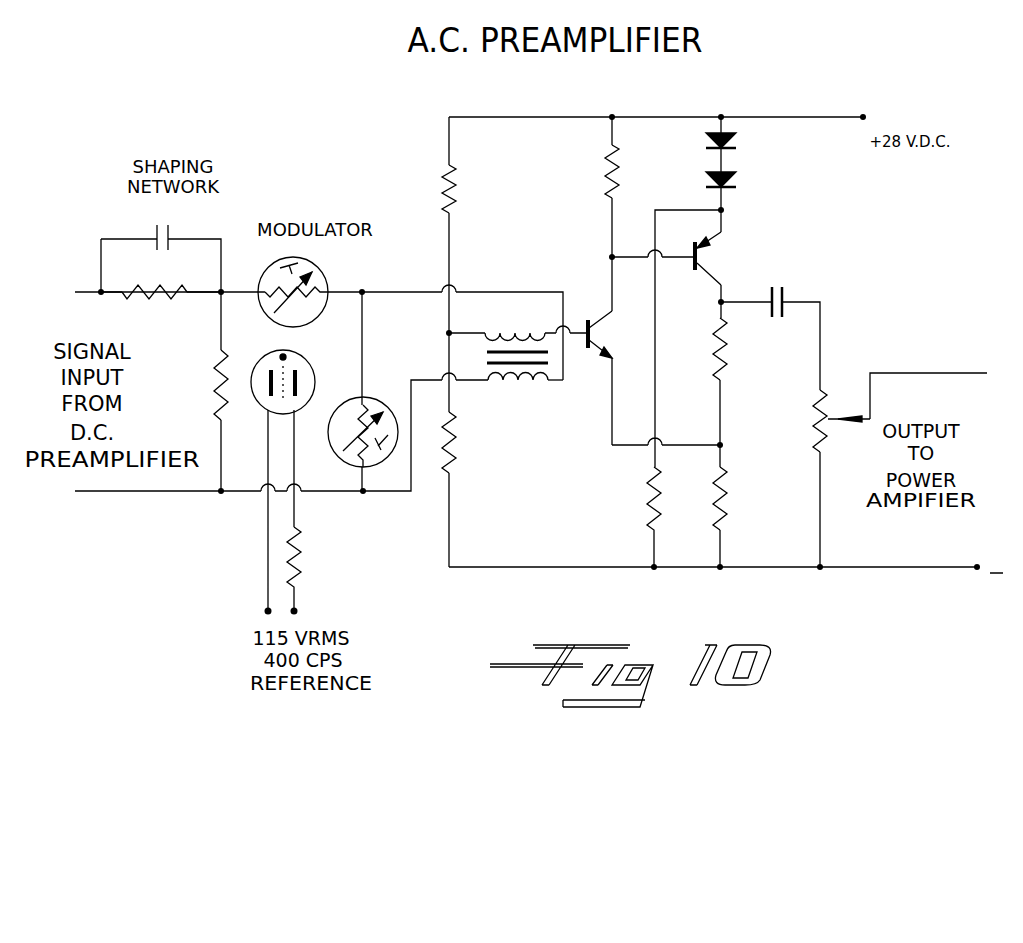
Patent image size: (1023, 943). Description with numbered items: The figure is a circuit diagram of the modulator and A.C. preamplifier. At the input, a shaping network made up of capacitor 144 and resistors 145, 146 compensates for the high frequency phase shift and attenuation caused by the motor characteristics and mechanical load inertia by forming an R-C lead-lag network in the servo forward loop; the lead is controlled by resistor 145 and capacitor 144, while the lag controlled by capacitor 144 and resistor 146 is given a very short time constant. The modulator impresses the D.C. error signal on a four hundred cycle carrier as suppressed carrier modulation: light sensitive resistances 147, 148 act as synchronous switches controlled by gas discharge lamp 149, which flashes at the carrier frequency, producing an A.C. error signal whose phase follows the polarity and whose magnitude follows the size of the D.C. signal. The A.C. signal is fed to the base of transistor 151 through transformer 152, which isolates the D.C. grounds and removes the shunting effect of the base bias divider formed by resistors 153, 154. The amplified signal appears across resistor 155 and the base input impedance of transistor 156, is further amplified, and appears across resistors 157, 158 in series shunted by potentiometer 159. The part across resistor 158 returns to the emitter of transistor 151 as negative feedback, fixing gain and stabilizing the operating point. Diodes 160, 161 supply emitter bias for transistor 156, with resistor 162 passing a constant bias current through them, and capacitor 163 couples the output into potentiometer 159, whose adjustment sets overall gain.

The capacitor 144 is at (160, 226).
The resistor 145 is at (161, 283).
The resistor 146 is at (198, 385).
The light sensitive resistance 147 is at (293, 283).
The light sensitive resistance 148 is at (363, 422).
The gas discharge lamp 149 is at (283, 471).
The transistor 151 is at (607, 378).
The transformer 152 is at (516, 371).
The resistor 153 is at (434, 189).
The resistor 154 is at (468, 442).
The resistor 155 is at (594, 171).
The transistor 156 is at (723, 258).
The resistor 157 is at (737, 349).
The resistor 158 is at (737, 498).
The potentiometer 159 is at (801, 421).
The diode 160 is at (742, 143).
The diode 161 is at (742, 184).
The resistor 162 is at (638, 517).
The capacitor 163 is at (795, 296).